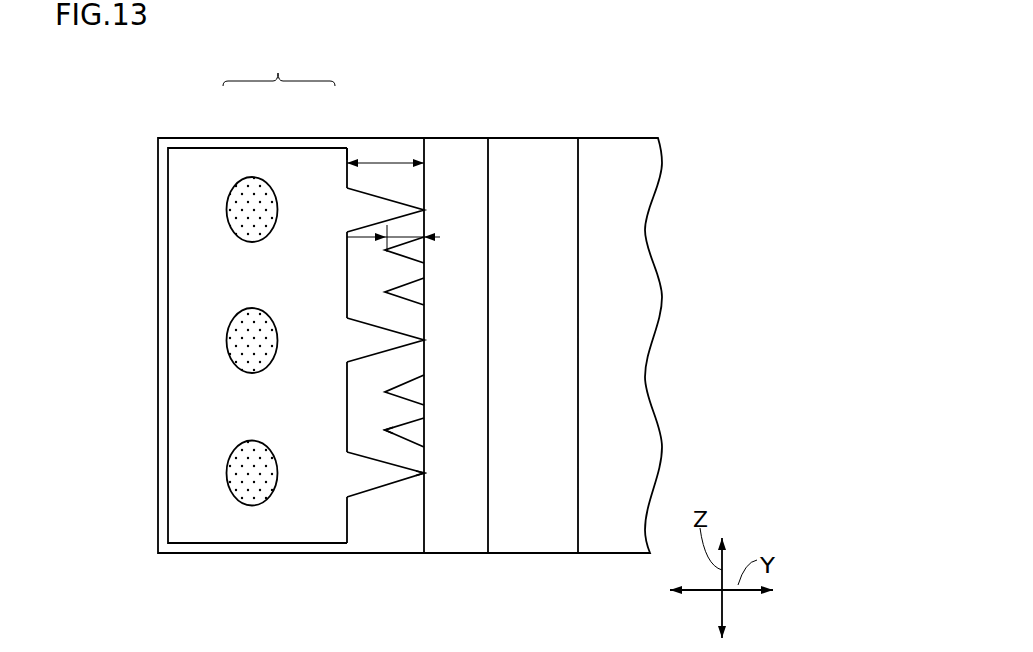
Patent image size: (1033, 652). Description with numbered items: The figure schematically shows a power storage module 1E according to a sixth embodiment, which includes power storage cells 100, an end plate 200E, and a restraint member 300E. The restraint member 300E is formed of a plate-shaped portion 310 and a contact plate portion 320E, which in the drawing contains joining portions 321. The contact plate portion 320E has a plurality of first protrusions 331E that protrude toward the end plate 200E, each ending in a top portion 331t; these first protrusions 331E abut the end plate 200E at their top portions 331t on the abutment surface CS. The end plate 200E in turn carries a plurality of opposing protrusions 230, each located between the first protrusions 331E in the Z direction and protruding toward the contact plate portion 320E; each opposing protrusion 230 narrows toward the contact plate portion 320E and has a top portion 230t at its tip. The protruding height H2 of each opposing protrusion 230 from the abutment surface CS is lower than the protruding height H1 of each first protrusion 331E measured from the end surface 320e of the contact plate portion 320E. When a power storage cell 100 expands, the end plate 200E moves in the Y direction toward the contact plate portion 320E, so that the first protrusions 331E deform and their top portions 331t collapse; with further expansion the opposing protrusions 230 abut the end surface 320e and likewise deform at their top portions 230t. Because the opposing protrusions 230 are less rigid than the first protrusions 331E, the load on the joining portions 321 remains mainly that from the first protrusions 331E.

The power storage module 1E is at (415, 328).
The restraint member 300E is at (279, 67).
The plate-shaped portion 310 is at (246, 145).
The contact plate portion 320E is at (472, 329).
The end surface 320e is at (349, 149).
The joining portions 321 is at (250, 488).
The first protrusions 331E is at (374, 475).
The top portion 331t is at (436, 473).
The opposing protrusions 230 is at (413, 430).
The top portion 230t is at (374, 430).
The abutment surface CS is at (425, 137).
The end plate 200E is at (457, 162).
The power storage cells 100 is at (535, 162).
The protruding height H1 is at (387, 160).
The protruding height H2 is at (448, 240).